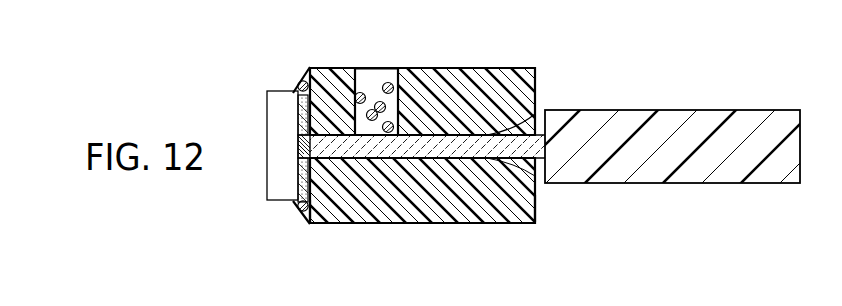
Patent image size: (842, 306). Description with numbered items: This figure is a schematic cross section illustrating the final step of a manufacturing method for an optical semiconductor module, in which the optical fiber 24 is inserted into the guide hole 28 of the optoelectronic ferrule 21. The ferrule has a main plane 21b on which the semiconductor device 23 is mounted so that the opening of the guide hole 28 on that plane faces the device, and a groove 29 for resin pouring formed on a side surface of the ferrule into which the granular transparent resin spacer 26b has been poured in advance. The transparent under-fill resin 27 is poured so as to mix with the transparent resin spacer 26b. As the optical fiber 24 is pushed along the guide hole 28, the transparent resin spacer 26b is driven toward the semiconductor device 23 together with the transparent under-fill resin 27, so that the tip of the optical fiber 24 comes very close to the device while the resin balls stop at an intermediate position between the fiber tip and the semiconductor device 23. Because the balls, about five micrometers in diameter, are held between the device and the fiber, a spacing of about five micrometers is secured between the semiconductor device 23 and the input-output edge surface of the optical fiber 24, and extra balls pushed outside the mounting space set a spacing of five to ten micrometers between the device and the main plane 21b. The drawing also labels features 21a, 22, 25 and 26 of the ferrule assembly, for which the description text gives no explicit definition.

The optoelectronic ferrule 21 is at (463, 72).
The ferrule end face 21a is at (536, 210).
The main plane 21b is at (318, 200).
The adhesive layer 22 is at (299, 95).
The semiconductor device 23 is at (267, 116).
The optical fiber 24 is at (460, 150).
The boot 25 is at (748, 118).
The fiber end portion 26 is at (298, 150).
The transparent resin spacer 26b is at (391, 84).
The transparent under-fill resin 27 is at (293, 205).
The guide hole 28 is at (522, 126).
The groove 29 is at (372, 72).